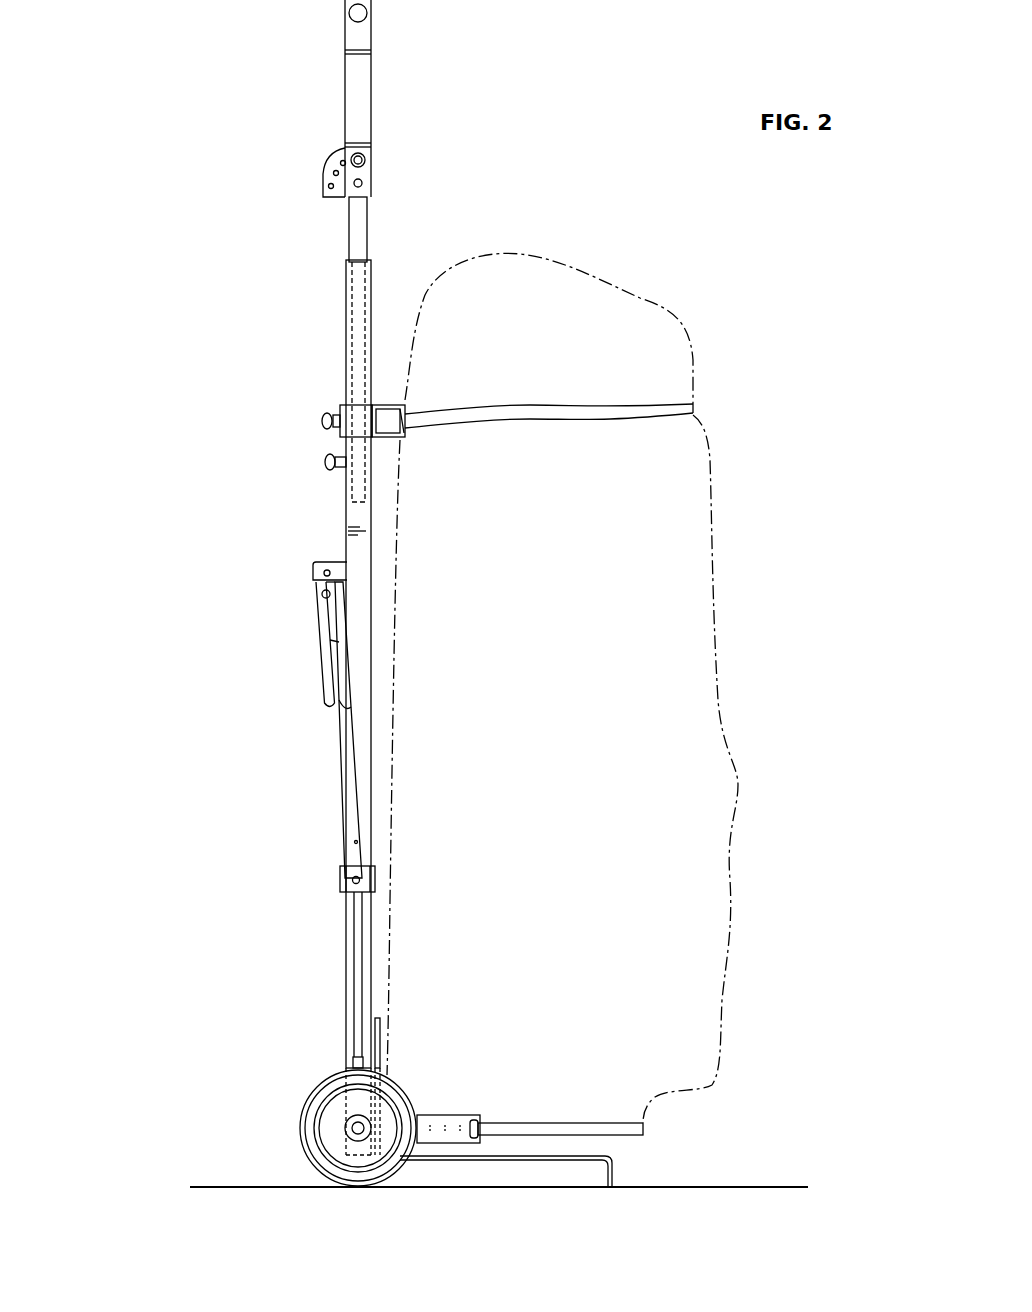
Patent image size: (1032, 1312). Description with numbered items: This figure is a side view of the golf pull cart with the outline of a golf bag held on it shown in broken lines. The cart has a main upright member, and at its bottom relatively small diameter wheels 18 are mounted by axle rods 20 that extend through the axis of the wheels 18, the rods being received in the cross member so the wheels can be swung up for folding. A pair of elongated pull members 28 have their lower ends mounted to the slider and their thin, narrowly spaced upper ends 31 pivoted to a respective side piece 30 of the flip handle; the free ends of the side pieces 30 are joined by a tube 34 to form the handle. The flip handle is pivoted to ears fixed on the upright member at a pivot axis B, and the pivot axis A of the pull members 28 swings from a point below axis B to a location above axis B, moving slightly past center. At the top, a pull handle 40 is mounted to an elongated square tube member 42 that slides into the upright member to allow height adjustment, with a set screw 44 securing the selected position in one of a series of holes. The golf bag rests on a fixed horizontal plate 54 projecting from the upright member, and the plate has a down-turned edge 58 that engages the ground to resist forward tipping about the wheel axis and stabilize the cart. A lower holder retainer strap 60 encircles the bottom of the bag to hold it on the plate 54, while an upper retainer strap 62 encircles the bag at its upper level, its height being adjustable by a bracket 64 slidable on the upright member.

The wheels 18 is at (305, 1099).
The axle rods 20 is at (365, 1125).
The pull members 28 is at (341, 761).
The side piece 30 is at (329, 700).
The upper ends 31 is at (333, 648).
The tube 34 is at (340, 875).
The pull handle 40 is at (374, 95).
The square tube member 42 is at (368, 222).
The set screw 44 is at (325, 462).
The horizontal plate 54 is at (568, 1155).
The down-turned edge 58 is at (615, 1172).
The lower holder retainer strap 60 is at (505, 1115).
The upper retainer strap 62 is at (670, 406).
The bracket 64 is at (356, 415).
The pivot axis A is at (324, 594).
The pivot axis B is at (313, 568).